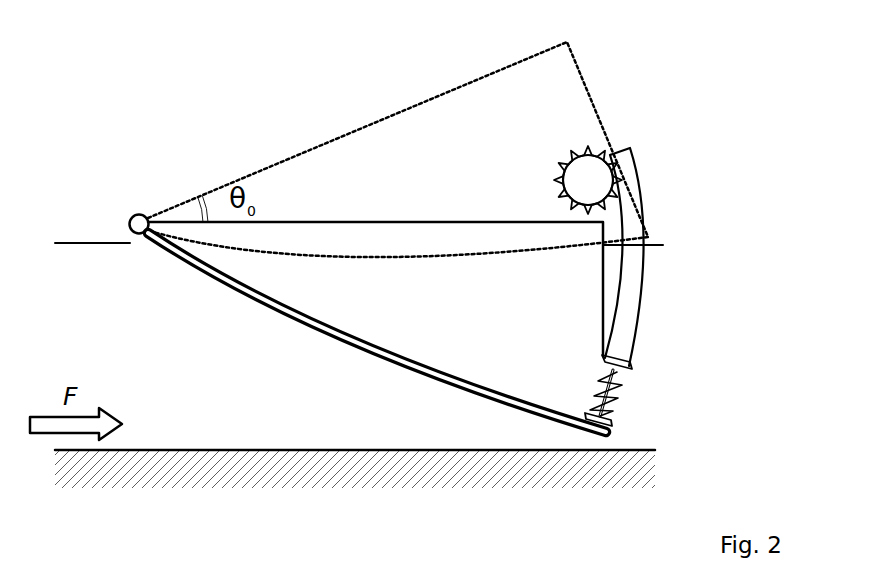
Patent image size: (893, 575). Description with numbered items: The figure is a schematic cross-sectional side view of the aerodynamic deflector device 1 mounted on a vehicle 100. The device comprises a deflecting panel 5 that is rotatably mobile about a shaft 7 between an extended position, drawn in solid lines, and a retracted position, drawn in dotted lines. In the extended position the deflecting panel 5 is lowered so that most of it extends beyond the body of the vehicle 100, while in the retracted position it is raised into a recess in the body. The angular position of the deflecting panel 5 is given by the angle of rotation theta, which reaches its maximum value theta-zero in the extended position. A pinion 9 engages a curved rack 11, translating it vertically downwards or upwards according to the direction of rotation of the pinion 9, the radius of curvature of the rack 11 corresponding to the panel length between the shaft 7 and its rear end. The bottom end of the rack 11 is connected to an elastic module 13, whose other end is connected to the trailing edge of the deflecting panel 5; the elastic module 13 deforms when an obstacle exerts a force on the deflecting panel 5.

The aerodynamic deflector device 1 is at (135, 133).
The deflecting panel 5 is at (258, 307).
The shaft 7 is at (130, 242).
The pinion 9 is at (581, 148).
The rack 11 is at (643, 280).
The elastic module 13 is at (652, 355).
The vehicle 100 is at (81, 217).